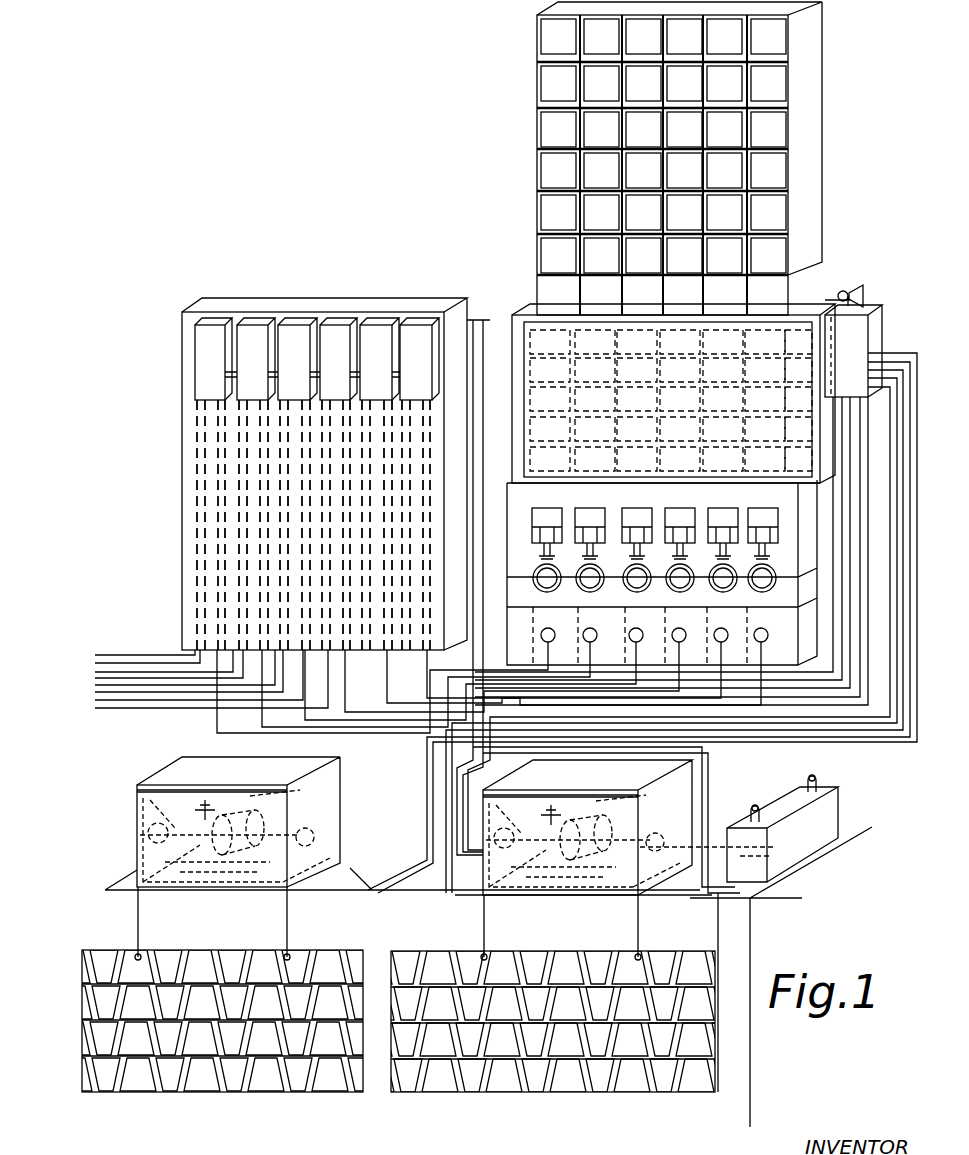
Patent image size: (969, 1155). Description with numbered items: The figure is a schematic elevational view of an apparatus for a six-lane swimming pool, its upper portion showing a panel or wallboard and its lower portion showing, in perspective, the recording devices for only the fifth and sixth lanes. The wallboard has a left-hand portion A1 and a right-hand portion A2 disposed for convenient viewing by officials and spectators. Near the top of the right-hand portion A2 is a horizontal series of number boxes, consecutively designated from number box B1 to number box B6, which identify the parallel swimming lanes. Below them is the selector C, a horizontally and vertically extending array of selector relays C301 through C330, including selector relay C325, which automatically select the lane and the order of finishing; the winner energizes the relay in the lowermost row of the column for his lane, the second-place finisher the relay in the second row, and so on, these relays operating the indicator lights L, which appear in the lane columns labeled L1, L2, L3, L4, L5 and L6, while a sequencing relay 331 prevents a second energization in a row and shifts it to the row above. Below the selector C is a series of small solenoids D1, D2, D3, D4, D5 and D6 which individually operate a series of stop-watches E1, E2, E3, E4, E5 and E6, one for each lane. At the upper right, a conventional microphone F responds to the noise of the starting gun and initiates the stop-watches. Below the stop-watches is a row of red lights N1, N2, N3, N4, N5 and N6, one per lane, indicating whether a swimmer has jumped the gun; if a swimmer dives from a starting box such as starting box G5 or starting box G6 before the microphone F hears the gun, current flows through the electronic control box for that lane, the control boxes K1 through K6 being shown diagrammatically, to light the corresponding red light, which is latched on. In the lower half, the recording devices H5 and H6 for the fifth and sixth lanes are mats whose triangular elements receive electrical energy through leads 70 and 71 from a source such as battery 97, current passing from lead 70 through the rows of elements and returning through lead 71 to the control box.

The indicator lights L is at (678, 160).
The lamp column 1 L1 is at (560, 32).
The lamp column 2 L2 is at (635, 50).
The lamp column 3 L3 is at (650, 50).
The lamp column 4 L4 is at (695, 50).
The lamp column 5 L5 is at (737, 50).
The lamp column 6 L6 is at (782, 33).
The number box B1 is at (538, 282).
The number box B6 is at (786, 292).
The left-hand panel portion A1 is at (278, 306).
The right-hand panel portion A2 is at (530, 312).
The electronic control box K1 is at (200, 346).
The electronic control box K6 is at (410, 330).
The selector C is at (662, 379).
The selector relay C330 is at (543, 338).
The selector relay C325 is at (768, 342).
The selector relay C301 is at (768, 460).
The sequencing relay 331 is at (798, 459).
The microphone F is at (860, 286).
The solenoid D1 is at (552, 507).
The solenoid D2 is at (595, 507).
The solenoid D3 is at (642, 507).
The solenoid D4 is at (685, 507).
The solenoid D5 is at (728, 507).
The solenoid D6 is at (767, 507).
The stop-watch E1 is at (539, 590).
The stop-watch E2 is at (582, 590).
The stop-watch E3 is at (629, 590).
The stop-watch E4 is at (672, 590).
The stop-watch E5 is at (715, 590).
The stop-watch E6 is at (756, 590).
The red light N1 is at (545, 644).
The red light N2 is at (587, 644).
The red light N3 is at (633, 644).
The red light N4 is at (676, 644).
The red light N5 is at (718, 644).
The red light N6 is at (758, 644).
The starting box G5 is at (210, 774).
The starting box G6 is at (560, 779).
The recording device H5 is at (325, 1094).
The recording device H6 is at (655, 1094).
The lead 70 is at (713, 800).
The lead 71 is at (707, 790).
The battery 97 is at (815, 822).